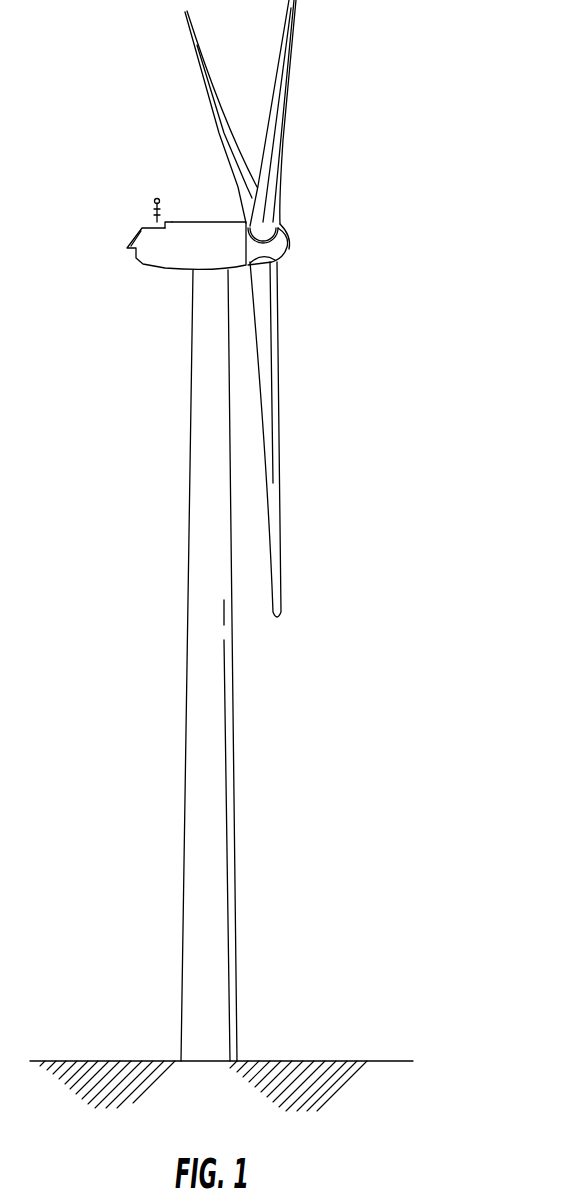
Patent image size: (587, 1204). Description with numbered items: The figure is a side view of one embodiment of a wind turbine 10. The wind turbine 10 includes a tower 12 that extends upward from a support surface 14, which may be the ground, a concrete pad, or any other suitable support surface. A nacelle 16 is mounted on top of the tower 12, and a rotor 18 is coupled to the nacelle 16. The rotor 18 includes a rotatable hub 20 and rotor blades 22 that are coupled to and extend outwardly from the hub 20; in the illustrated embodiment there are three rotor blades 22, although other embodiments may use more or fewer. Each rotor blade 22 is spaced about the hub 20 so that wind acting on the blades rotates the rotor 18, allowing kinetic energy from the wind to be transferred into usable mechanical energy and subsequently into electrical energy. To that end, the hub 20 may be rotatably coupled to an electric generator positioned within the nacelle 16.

The wind turbine 10 is at (251, 555).
The tower 12 is at (197, 775).
The support surface 14 is at (102, 1061).
The nacelle 16 is at (168, 270).
The rotor 18 is at (280, 308).
The rotatable hub 20 is at (286, 243).
The rotor blade 22 is at (220, 135).